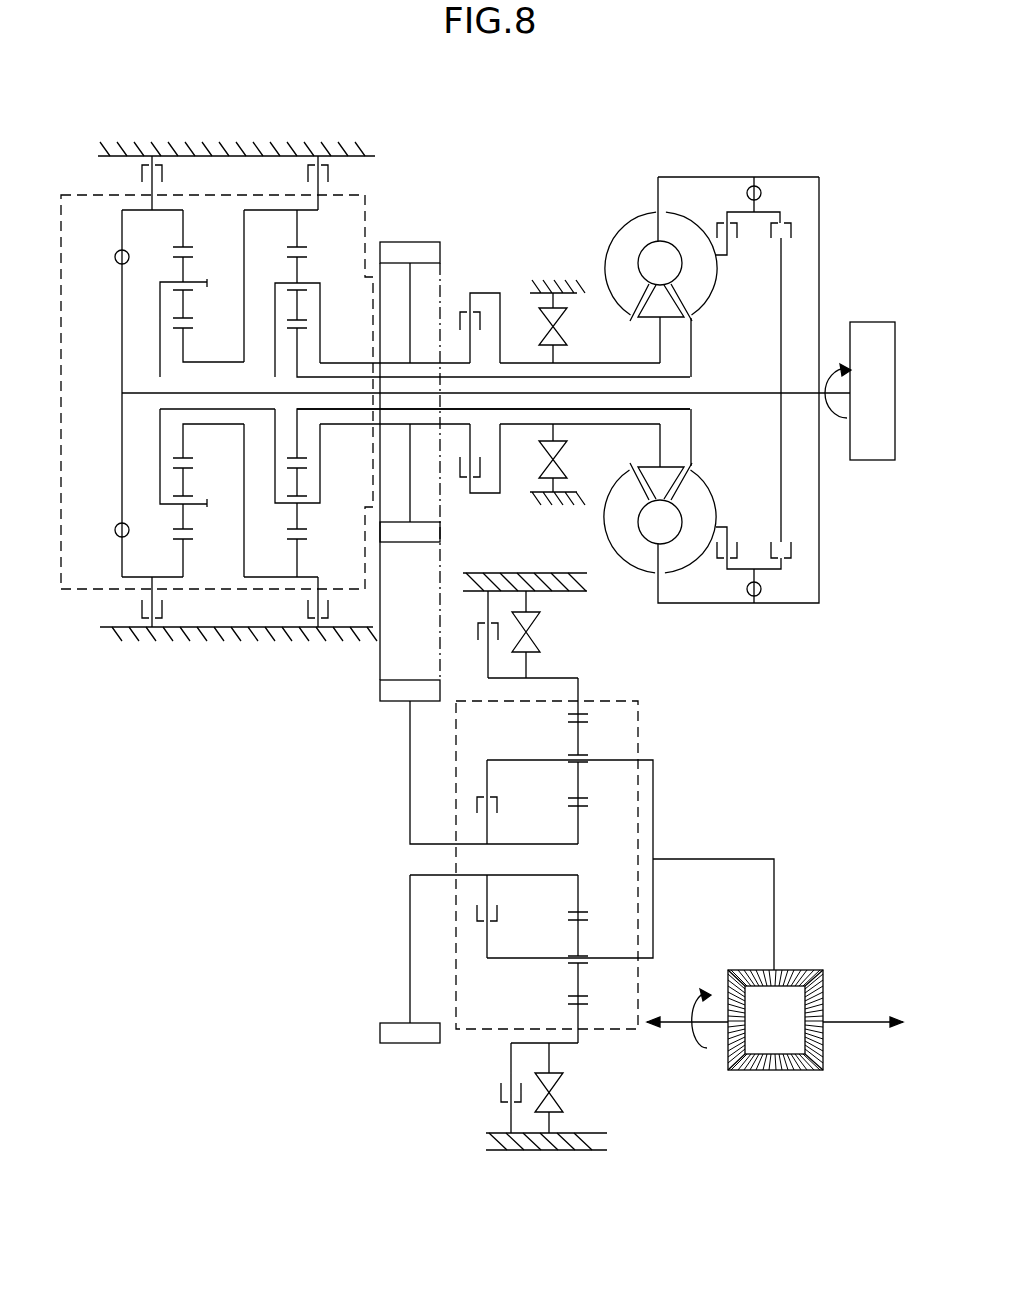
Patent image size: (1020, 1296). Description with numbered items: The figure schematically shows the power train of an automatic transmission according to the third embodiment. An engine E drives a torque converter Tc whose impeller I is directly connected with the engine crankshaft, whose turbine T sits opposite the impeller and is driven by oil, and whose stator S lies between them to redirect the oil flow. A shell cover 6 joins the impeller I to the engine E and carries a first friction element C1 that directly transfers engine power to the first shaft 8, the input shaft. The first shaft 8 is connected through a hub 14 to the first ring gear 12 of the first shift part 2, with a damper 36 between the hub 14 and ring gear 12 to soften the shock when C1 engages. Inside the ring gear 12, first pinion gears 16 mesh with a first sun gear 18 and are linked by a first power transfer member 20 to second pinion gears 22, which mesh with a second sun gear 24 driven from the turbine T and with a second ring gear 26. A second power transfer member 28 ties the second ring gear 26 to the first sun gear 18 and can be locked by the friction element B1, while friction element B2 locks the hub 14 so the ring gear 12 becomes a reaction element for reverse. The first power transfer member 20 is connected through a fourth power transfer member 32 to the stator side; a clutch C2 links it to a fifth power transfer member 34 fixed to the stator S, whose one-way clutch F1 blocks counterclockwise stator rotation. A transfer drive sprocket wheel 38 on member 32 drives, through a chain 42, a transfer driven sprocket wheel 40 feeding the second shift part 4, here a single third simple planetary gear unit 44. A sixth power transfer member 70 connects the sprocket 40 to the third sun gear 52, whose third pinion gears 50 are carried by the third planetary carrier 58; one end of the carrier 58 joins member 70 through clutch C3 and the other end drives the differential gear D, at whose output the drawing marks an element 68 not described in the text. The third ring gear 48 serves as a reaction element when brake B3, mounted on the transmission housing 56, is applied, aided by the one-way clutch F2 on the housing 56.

The first shift part 2 is at (72, 194).
The second shift part 4 is at (658, 713).
The shell cover 6 is at (736, 177).
The first shaft 8 is at (742, 392).
The first ring gear 12 is at (176, 247).
The hub 14 is at (121, 326).
The first pinion gears 16 is at (190, 320).
The first sun gear 18 is at (187, 329).
The first power transfer member 20 is at (178, 381).
The second pinion gears 22 is at (307, 256).
The second sun gear 24 is at (302, 342).
The second ring gear 26 is at (297, 247).
The second power transfer member 28 is at (243, 242).
The fourth power transfer member 32 is at (321, 304).
The fifth power transfer member 34 is at (522, 362).
The damper 36 is at (115, 257).
The transfer drive sprocket wheel 38 is at (440, 255).
The transfer driven sprocket wheel 40 is at (380, 690).
The chain 42 is at (440, 512).
The third simple planetary gear unit 44 is at (568, 976).
The third ring gear 48 is at (568, 715).
The third pinion gears 50 is at (582, 742).
The third sun gear 52 is at (582, 806).
The transmission housing 56 is at (246, 148).
The third planetary carrier 58 is at (736, 858).
The output axle 68 is at (868, 1018).
The sixth power transfer member 70 is at (410, 768).
The second friction element B1 is at (335, 391).
The third friction element B2 is at (169, 391).
The sixth friction element B3 is at (471, 634).
The first friction element C1 is at (766, 390).
The fourth friction element C2 is at (470, 390).
The fifth friction element C3 is at (504, 859).
The first one-way clutch F1 is at (564, 392).
The second one-way clutch F2 is at (533, 634).
The impeller I is at (621, 247).
The turbine T is at (709, 277).
The stator S is at (646, 319).
The torque converter Tc is at (672, 166).
The engine E is at (860, 391).
The differential gear D is at (829, 957).